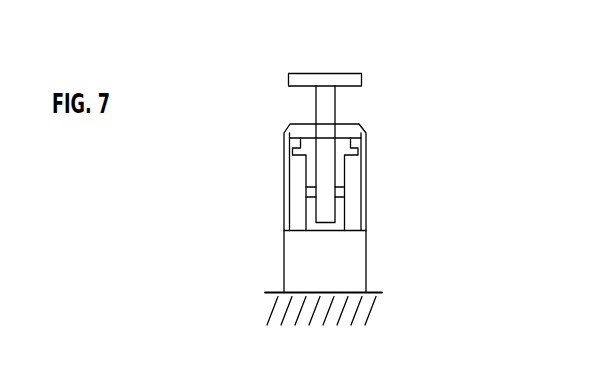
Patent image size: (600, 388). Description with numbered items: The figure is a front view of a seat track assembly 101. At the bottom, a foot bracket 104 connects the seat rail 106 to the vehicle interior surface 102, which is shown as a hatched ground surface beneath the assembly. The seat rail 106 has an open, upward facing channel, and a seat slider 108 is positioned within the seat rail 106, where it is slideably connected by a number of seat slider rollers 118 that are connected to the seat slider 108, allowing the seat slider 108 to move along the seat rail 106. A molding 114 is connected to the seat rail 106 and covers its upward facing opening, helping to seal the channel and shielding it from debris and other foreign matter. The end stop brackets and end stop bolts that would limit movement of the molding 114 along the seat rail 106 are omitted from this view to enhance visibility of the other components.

The seat track assembly 101 is at (488, 68).
The vehicle interior surface 102 is at (372, 295).
The foot bracket 104 is at (284, 278).
The seat rail 106 is at (366, 170).
The seat slider 108 is at (323, 82).
The molding 114 is at (289, 123).
The seat slider rollers 118 is at (290, 204).